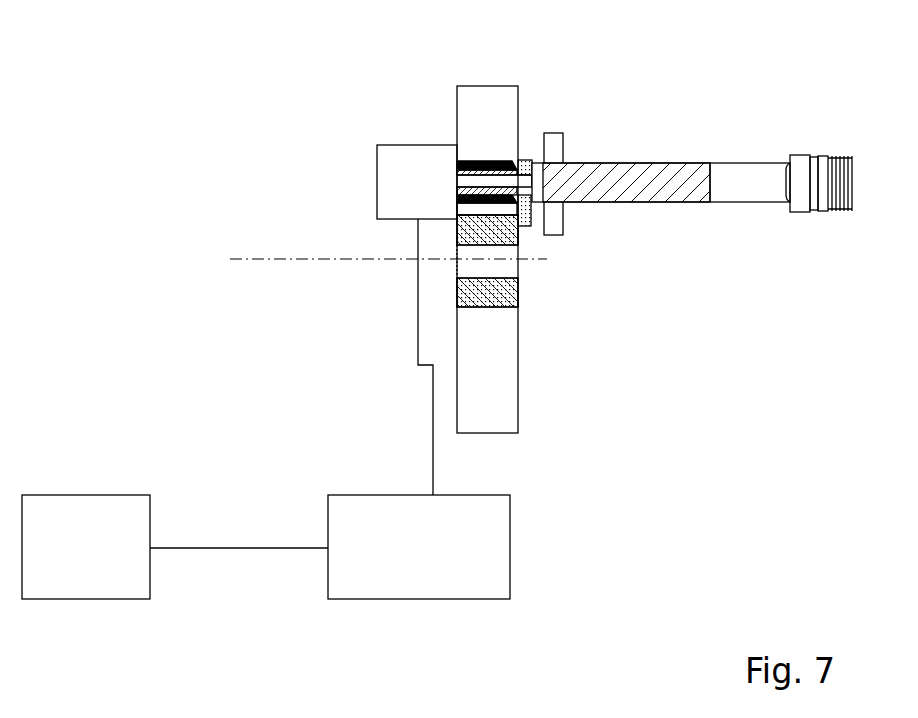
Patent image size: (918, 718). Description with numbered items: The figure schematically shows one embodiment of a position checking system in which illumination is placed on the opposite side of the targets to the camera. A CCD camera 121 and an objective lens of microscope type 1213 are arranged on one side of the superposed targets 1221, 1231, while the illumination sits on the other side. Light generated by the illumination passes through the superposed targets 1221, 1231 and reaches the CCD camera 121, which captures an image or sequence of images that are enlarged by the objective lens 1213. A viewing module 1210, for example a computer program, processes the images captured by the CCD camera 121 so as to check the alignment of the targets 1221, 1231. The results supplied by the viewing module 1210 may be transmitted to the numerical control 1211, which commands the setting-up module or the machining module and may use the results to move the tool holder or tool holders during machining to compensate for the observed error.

The CCD camera 121 is at (377, 182).
The objective lens of microscope type 1213 is at (478, 162).
The target 1231 is at (526, 168).
The target 1221 is at (565, 163).
The viewing module 1210 is at (419, 547).
The numerical control 1211 is at (86, 547).